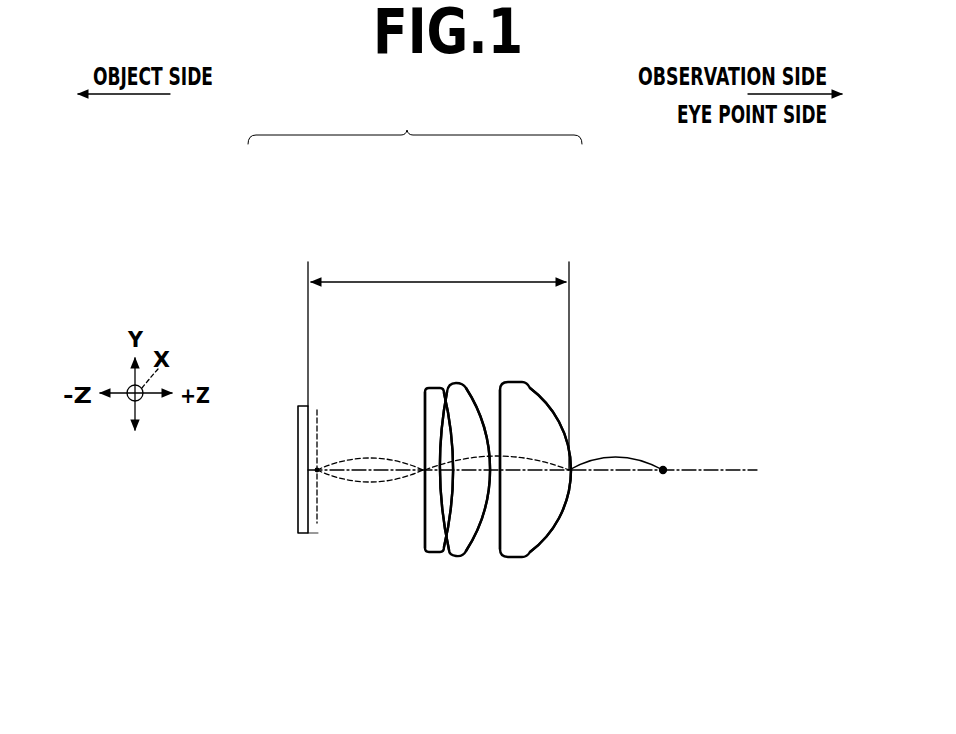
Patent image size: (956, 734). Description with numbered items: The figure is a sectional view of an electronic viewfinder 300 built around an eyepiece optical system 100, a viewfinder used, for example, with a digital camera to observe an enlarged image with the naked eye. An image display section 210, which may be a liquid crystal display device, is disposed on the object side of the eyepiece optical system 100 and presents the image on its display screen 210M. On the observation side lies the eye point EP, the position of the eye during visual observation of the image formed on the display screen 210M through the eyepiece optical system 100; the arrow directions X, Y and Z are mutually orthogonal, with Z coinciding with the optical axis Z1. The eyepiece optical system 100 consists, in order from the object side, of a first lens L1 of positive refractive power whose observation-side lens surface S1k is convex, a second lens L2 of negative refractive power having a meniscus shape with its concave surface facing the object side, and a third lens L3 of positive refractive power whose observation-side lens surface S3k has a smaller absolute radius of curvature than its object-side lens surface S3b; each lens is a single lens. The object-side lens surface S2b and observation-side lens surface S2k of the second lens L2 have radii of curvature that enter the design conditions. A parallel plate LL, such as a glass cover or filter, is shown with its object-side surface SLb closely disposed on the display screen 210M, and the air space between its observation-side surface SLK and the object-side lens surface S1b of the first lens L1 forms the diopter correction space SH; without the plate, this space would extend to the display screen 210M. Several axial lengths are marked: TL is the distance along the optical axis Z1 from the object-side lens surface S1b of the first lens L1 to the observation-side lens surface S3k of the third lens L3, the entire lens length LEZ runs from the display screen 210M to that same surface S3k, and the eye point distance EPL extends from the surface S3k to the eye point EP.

The electronic viewfinder 300 is at (415, 123).
The eyepiece optical system 100 is at (496, 211).
The entire lens length LEZ is at (413, 282).
The optical axis Z1 is at (750, 467).
The image display section 210 is at (307, 407).
The display screen 210M is at (309, 426).
The parallel plate LL is at (319, 441).
The diopter correction space SH is at (377, 456).
The distance along the optical axis from S1b to S3k TL is at (522, 458).
The first lens L1 is at (434, 392).
The second lens L2 is at (458, 388).
The third lens L3 is at (518, 386).
The object-side lens surface of the first lens S1b is at (425, 530).
The observation-side lens surface of the first lens S1k is at (444, 540).
The object-side lens surface of the second lens S2b is at (456, 538).
The observation-side lens surface of the second lens S2k is at (473, 542).
The object-side lens surface of the third lens S3b is at (500, 540).
The observation-side lens surface of the third lens S3k is at (548, 538).
The eye point distance EPL is at (620, 455).
The eye point EP is at (666, 466).
The object-side surface of the parallel plate SLb is at (318, 533).
The observation-side surface of the parallel plate SLK is at (318, 500).